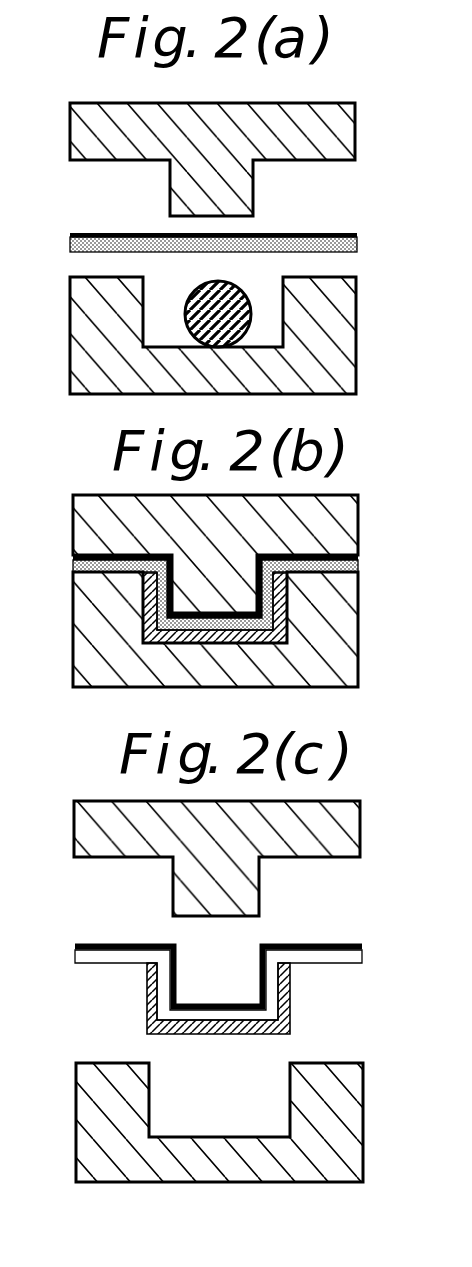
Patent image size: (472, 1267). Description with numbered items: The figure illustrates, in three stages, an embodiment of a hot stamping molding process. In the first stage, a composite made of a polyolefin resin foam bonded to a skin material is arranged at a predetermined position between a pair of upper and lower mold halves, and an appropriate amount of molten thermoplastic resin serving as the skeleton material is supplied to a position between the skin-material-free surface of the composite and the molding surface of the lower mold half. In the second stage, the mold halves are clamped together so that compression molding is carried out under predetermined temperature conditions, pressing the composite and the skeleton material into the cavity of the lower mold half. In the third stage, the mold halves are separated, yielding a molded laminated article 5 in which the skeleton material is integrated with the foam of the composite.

The molded laminated article 5 is at (119, 941).